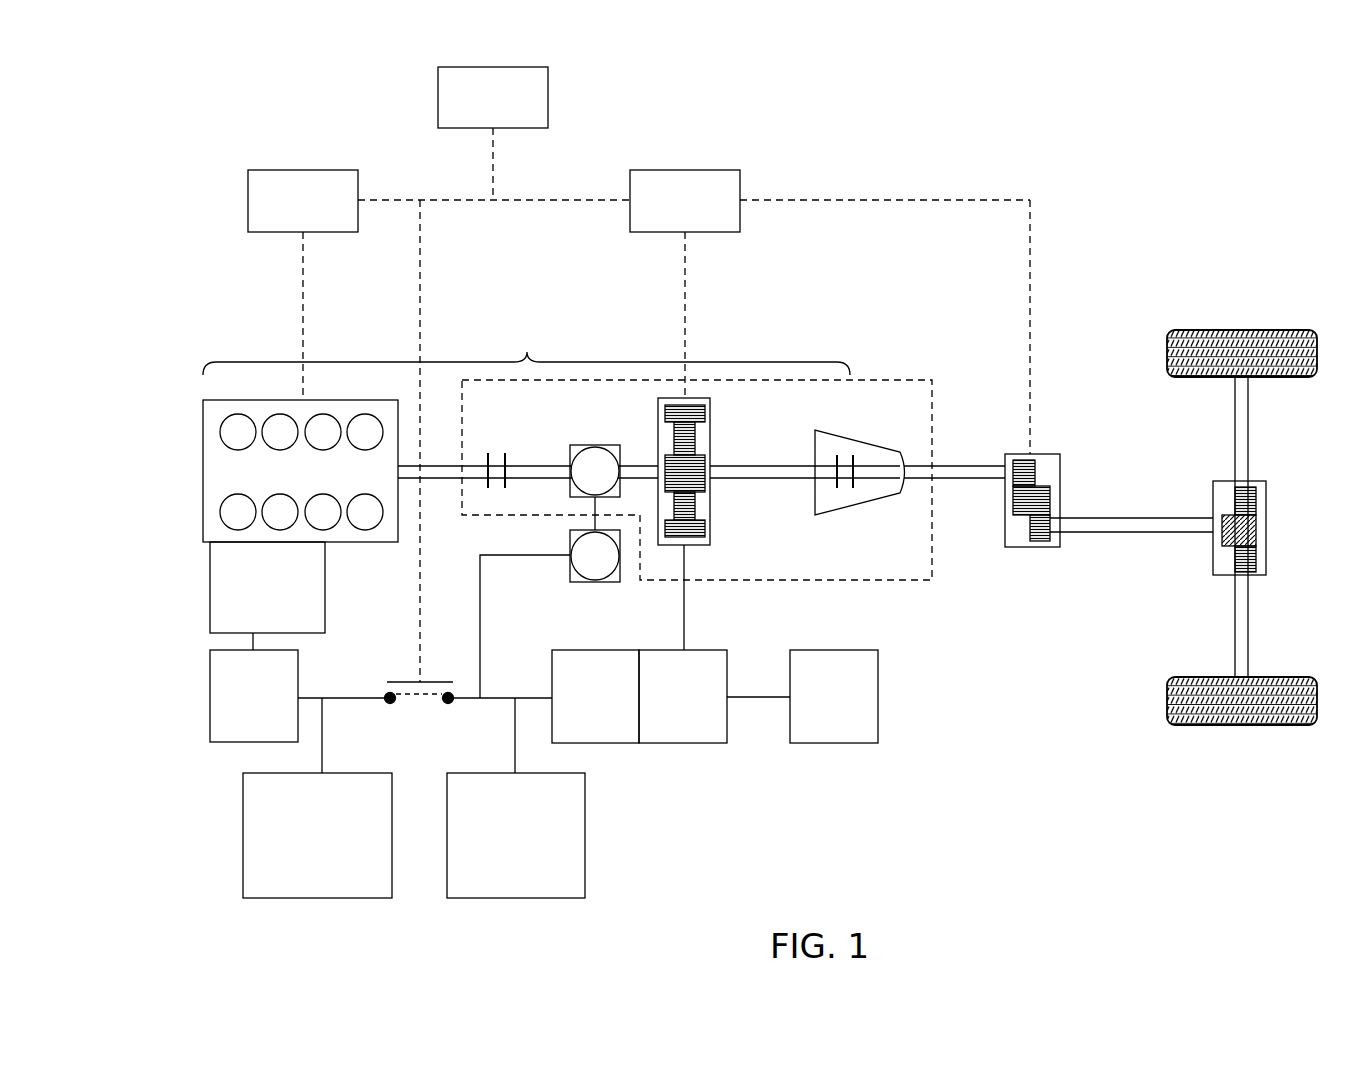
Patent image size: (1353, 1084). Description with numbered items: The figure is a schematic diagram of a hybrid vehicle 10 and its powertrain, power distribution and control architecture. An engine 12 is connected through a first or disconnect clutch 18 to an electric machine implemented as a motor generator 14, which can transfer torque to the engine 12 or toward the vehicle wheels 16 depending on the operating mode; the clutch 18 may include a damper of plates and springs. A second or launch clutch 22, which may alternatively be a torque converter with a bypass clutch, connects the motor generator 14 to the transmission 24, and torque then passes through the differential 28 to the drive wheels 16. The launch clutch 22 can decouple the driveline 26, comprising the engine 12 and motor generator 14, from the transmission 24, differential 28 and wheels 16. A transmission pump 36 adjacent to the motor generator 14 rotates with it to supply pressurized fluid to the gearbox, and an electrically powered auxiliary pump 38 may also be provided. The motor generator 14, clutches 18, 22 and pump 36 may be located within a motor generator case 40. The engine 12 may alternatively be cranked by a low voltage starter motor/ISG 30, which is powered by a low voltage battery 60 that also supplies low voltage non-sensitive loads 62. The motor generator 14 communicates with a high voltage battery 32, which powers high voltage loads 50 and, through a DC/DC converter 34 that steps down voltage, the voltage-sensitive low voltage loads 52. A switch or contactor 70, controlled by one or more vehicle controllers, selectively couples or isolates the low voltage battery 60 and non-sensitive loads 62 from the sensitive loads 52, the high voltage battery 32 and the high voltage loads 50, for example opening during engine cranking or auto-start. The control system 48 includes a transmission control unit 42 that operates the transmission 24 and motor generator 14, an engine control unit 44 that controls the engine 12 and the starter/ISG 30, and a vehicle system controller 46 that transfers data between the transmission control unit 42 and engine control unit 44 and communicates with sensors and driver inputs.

The hybrid vehicle 10 is at (1086, 176).
The engine 12 is at (215, 463).
The motor generator (M/G) 14 is at (712, 432).
The vehicle wheels 16 is at (1243, 330).
The first clutch (disconnect clutch) 18 is at (492, 453).
The second clutch (launch clutch) 22 is at (845, 455).
The transmission 24 is at (1047, 454).
The driveline 26 is at (526, 350).
The differential 28 is at (1262, 481).
The low voltage starter motor/ISG 30 is at (210, 590).
The high voltage battery 32 is at (710, 662).
The DC/DC converter 34 is at (578, 660).
The transmission pump 36 is at (595, 447).
The electrically powered auxiliary pump 38 is at (595, 582).
The motor generator case 40 is at (830, 583).
The transmission control unit (TCU) 42 is at (630, 187).
The engine control unit (ECU) 44 is at (248, 202).
The vehicle system controller (VSC) 46 is at (438, 98).
The control system 48 is at (692, 114).
The high voltage loads 50 is at (878, 697).
The low voltage (sensitive) loads 52 is at (515, 898).
The low voltage battery 60 is at (210, 697).
The low voltage (non-sensitive) loads 62 is at (322, 898).
The switch or contactor 70 is at (435, 680).